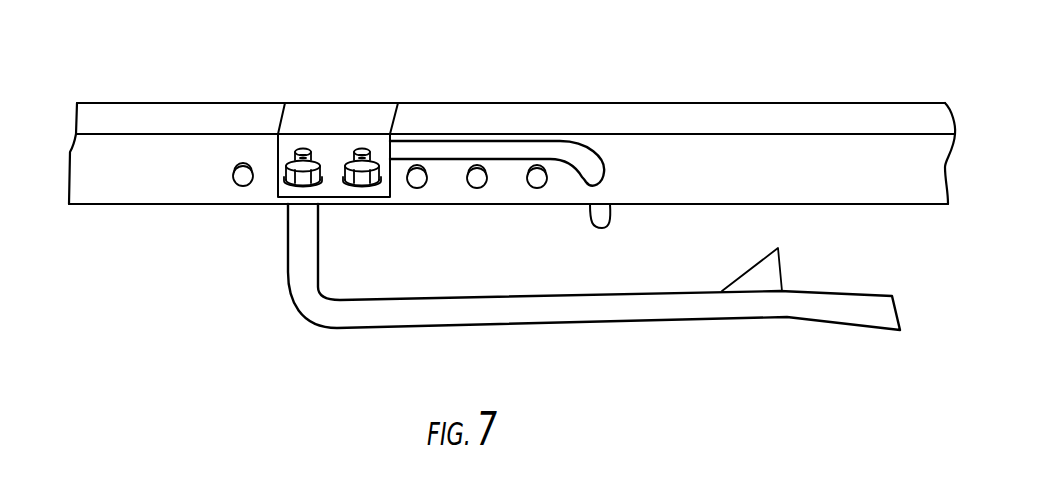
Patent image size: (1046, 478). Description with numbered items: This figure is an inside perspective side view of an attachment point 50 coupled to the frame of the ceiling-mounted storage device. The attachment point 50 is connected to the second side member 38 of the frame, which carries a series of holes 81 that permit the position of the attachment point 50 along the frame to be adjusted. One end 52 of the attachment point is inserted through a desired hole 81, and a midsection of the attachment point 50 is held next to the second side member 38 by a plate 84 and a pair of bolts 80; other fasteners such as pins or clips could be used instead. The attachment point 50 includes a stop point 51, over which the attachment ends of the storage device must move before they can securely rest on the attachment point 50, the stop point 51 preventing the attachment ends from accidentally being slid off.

The second side member 38 is at (112, 192).
The attachment point 50 is at (627, 309).
The stop point 51 is at (778, 250).
The end of the attachment point 52 is at (602, 228).
The bolts 80 is at (362, 148).
The holes 81 is at (243, 186).
The plate 84 is at (383, 120).